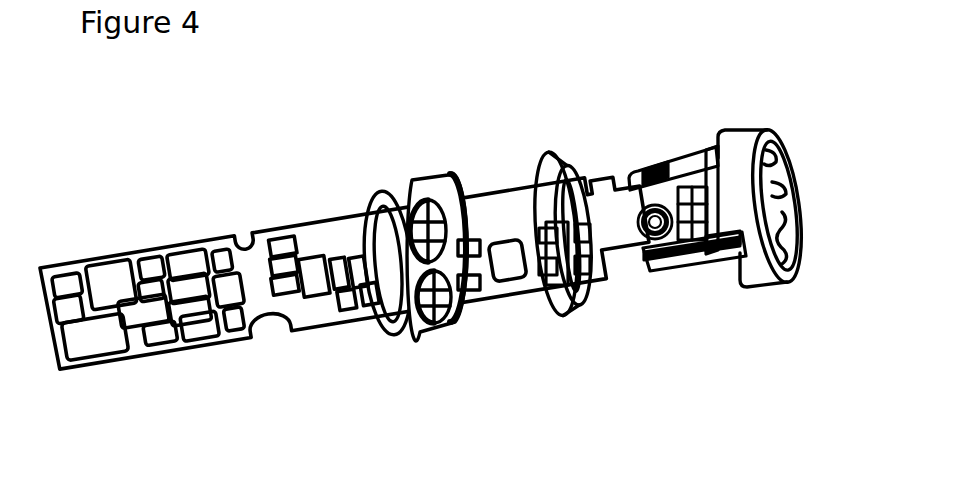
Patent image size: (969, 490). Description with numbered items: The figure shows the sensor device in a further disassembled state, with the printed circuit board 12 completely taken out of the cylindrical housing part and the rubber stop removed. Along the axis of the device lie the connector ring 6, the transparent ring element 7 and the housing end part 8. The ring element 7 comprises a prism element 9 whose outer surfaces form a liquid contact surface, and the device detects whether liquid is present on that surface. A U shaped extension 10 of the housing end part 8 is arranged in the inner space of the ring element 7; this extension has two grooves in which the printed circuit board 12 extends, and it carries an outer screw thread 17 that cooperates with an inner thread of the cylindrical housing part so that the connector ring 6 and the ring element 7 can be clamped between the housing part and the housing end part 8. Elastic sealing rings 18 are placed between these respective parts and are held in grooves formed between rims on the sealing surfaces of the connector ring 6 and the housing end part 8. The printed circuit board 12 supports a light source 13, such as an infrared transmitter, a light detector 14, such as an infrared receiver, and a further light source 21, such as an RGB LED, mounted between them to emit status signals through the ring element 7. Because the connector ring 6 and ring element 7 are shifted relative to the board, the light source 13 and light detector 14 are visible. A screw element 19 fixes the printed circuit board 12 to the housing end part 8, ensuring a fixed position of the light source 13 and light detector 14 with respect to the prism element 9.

The printed circuit board 12 is at (253, 268).
The connector ring 6 is at (418, 186).
The elastic sealing rings 18 is at (393, 332).
The prism element 9 is at (555, 247).
The transparent ring element 7 is at (570, 310).
The U shaped extension 10 is at (670, 163).
The light detector 14 is at (710, 167).
The further light source 21 is at (717, 213).
The screw element 19 is at (647, 243).
The outer screw thread 17 is at (673, 273).
The light source 13 is at (718, 246).
The housing end part 8 is at (758, 258).